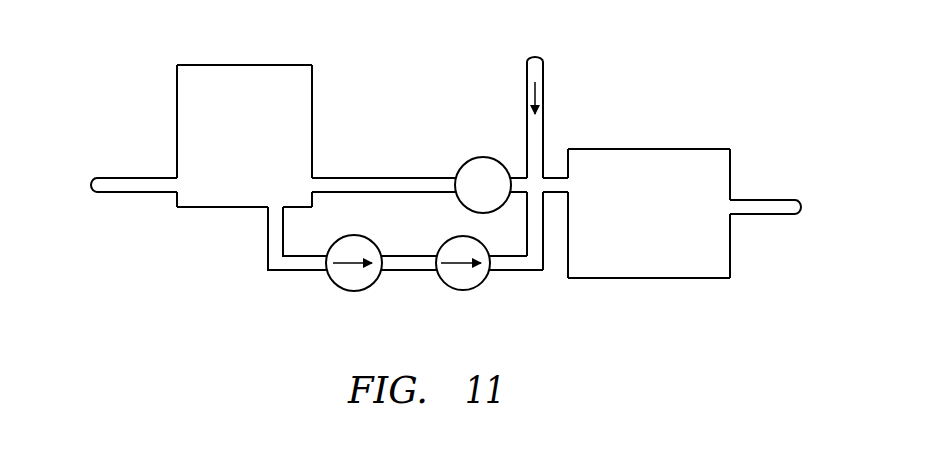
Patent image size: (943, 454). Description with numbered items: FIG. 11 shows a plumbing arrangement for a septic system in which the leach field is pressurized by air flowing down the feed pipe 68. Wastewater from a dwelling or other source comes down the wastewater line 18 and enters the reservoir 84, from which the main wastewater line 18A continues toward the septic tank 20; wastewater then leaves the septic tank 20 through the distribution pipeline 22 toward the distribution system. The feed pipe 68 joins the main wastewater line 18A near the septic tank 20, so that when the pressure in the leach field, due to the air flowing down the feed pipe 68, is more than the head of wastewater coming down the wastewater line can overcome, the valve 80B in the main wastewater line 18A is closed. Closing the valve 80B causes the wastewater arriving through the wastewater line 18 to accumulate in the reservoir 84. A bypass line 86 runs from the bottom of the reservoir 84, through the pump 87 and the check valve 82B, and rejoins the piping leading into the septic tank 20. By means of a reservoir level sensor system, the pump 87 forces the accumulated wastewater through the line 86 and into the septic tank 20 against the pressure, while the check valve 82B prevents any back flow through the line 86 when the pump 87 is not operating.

The wastewater line 18 is at (124, 178).
The main wastewater line 18A is at (380, 178).
The septic tank 20 is at (657, 149).
The distribution pipeline 22 is at (769, 200).
The feed pipe 68 is at (545, 88).
The valve 80B is at (483, 157).
The check valve 82B is at (463, 290).
The reservoir 84 is at (213, 65).
The line 86 is at (282, 272).
The pump 87 is at (354, 291).